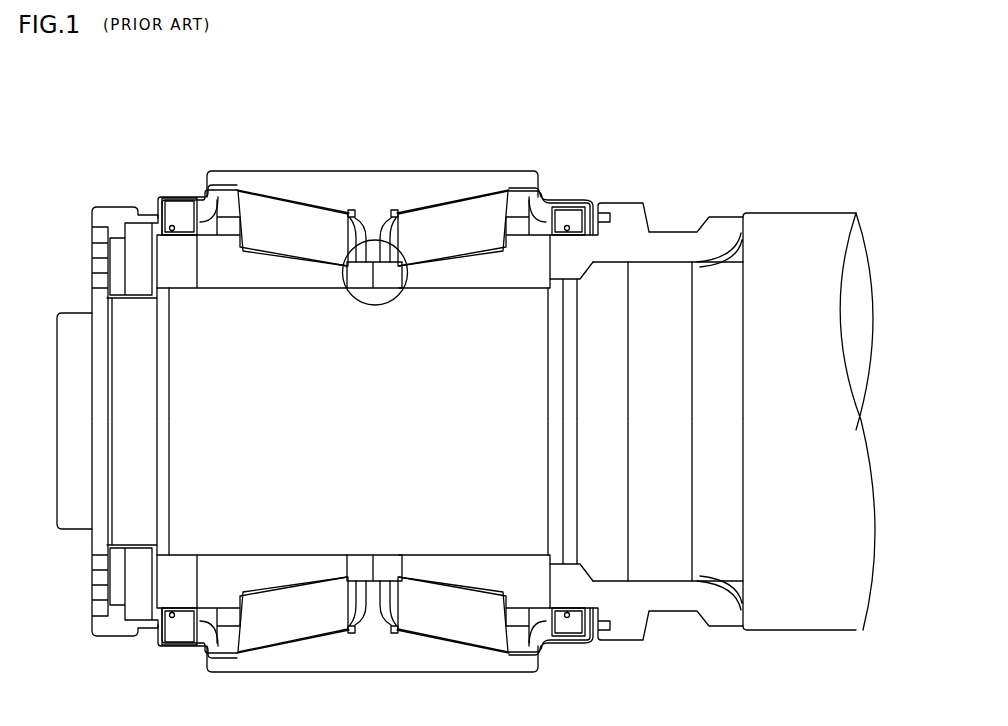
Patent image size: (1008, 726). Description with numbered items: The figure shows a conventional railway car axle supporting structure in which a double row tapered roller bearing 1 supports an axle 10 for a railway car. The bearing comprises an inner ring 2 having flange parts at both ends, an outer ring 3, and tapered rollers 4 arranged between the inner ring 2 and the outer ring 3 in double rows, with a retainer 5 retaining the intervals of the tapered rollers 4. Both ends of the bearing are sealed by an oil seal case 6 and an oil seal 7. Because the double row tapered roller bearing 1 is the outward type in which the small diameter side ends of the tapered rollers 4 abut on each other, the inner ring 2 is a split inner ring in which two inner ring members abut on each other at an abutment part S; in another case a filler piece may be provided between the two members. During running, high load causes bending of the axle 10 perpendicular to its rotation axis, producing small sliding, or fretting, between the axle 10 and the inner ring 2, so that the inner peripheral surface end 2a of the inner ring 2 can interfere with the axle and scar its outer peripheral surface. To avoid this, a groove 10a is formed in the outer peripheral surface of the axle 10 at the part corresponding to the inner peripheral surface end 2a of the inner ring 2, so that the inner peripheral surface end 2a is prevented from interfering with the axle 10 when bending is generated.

The double row tapered roller bearing 1 is at (86, 147).
The inner ring 2 is at (252, 277).
The inner peripheral surface end 2a is at (597, 203).
The outer ring 3 is at (280, 183).
The tapered rollers 4 is at (319, 240).
The retainer 5 is at (357, 210).
The oil seal case 6 is at (183, 205).
The oil seal 7 is at (213, 194).
The abutment part S is at (411, 268).
The axle 10 is at (785, 240).
The groove 10a is at (555, 320).